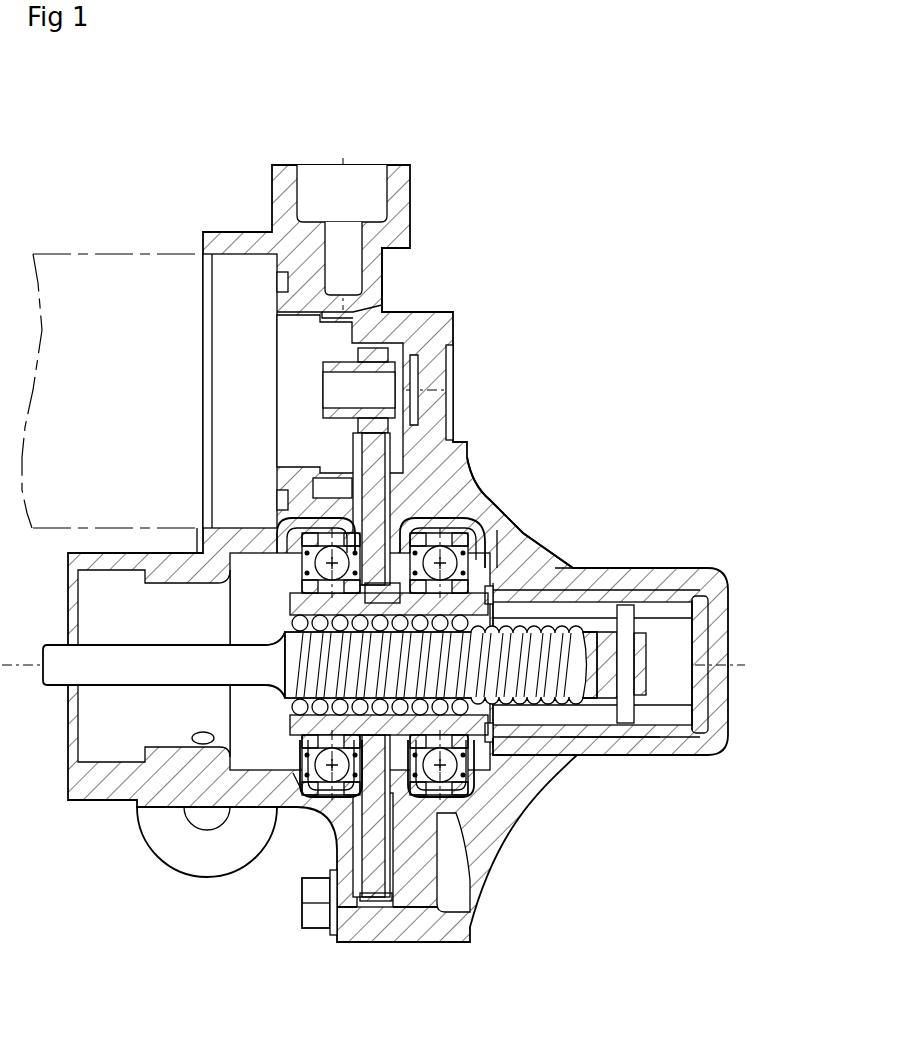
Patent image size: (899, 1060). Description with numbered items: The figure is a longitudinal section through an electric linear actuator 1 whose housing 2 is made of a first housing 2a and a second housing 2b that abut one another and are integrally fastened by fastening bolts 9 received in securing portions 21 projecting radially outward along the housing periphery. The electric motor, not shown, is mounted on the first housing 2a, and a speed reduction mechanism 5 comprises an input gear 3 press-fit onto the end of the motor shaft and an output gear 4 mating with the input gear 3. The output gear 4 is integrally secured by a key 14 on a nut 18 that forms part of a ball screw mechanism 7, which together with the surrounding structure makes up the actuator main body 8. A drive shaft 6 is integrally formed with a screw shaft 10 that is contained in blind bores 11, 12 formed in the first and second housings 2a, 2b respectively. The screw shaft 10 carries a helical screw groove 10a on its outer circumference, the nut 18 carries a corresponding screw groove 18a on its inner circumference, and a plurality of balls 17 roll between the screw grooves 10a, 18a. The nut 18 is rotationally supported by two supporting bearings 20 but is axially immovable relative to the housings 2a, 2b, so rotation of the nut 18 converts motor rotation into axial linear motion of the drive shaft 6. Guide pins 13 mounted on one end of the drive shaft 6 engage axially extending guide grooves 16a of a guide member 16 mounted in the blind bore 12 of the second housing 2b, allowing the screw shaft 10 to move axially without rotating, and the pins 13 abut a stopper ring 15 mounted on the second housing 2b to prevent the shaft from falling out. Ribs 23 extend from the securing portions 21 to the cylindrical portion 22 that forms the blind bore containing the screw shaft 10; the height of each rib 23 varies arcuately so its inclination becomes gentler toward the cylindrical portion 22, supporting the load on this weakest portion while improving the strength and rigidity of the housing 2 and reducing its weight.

The electric linear actuator 1 is at (389, 550).
The housing 2 is at (398, 553).
The first housing 2a is at (444, 280).
The second housing 2b is at (475, 383).
The input gear 3 is at (319, 384).
The output gear 4 is at (426, 624).
The speed reduction mechanism 5 is at (319, 406).
The drive shaft 6 is at (164, 648).
The screw shaft 10 is at (389, 648).
The screw groove 10a is at (268, 651).
The ball screw mechanism 7 is at (501, 843).
The actuator main body 8 is at (614, 624).
The fastening bolts 9 is at (293, 902).
The blind bore 11 is at (154, 666).
The blind bore 12 is at (542, 771).
The guide pins 13 is at (588, 668).
The key 14 is at (385, 664).
The stopper ring 15 is at (409, 532).
The guide member 16 is at (691, 634).
The guide grooves 16a is at (661, 627).
The balls 17 is at (437, 665).
The nut 18 is at (363, 595).
The screw groove 18a is at (353, 716).
The supporting bearings 20 is at (375, 805).
The securing portions 21 is at (439, 915).
The cylindrical portion 22 is at (610, 799).
The ribs 23 is at (525, 512).